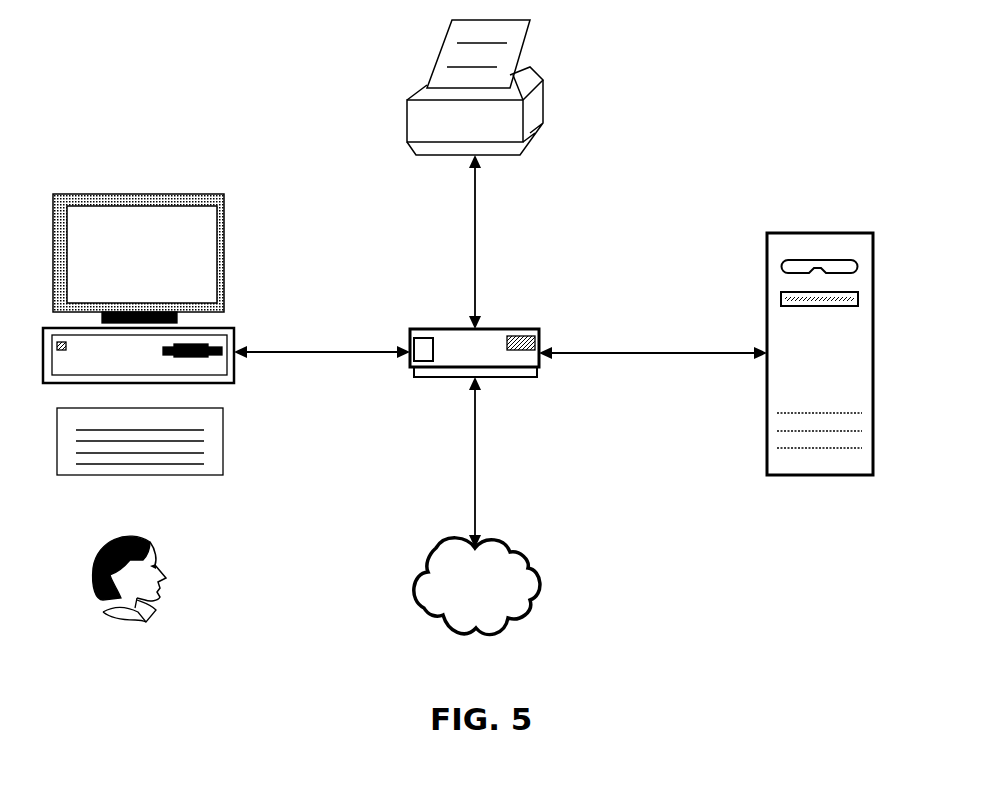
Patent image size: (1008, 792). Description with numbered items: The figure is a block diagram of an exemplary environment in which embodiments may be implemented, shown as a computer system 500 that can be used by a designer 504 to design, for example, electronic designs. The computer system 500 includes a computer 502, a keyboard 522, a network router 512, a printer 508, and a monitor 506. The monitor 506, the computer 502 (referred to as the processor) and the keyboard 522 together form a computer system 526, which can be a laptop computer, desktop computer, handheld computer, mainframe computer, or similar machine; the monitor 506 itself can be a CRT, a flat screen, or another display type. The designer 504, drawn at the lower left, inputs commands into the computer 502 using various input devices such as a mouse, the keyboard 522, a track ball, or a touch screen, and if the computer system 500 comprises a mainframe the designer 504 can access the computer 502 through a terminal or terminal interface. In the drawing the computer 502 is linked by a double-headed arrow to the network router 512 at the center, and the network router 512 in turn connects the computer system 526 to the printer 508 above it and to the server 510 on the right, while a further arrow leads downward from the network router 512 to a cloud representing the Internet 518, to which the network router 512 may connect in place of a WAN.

The computer system 500 is at (747, 97).
The computer 502 is at (237, 327).
The designer 504 is at (157, 540).
The monitor 506 is at (217, 193).
The printer 508 is at (402, 132).
The server 510 is at (772, 458).
The network router 512 is at (507, 328).
The Internet 518 is at (503, 555).
The keyboard 522 is at (225, 432).
The computer system 526 is at (229, 248).